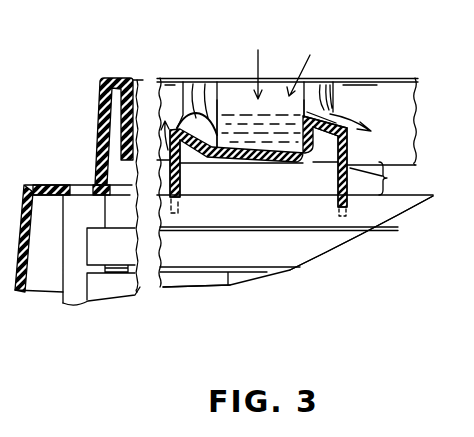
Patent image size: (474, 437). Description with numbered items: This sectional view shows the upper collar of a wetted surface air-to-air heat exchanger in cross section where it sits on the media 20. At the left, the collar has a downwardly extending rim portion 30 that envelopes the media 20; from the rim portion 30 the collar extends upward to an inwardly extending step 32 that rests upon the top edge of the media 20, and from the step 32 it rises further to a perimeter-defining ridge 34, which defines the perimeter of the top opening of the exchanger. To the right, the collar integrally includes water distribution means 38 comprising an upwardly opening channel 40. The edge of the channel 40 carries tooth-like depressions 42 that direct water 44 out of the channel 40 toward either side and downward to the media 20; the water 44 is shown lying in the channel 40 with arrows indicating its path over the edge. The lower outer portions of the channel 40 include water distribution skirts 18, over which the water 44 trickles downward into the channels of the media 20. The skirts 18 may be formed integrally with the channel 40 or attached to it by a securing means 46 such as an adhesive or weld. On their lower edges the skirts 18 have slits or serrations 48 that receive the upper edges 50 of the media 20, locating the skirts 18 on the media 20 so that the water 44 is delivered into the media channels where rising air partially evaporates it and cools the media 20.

The water distribution skirt 18 is at (387, 178).
The media 20 is at (228, 285).
The rim portion 30 is at (42, 277).
The step 32 is at (48, 182).
The perimeter-defining ridge 34 is at (118, 79).
The water distribution means 38 is at (277, 90).
The channel 40 is at (268, 163).
The tooth-like depressions 42 is at (333, 117).
The water 44 is at (240, 113).
The securing means 46 is at (348, 154).
The slits or serrations 48 is at (182, 190).
The upper edges 50 is at (398, 212).